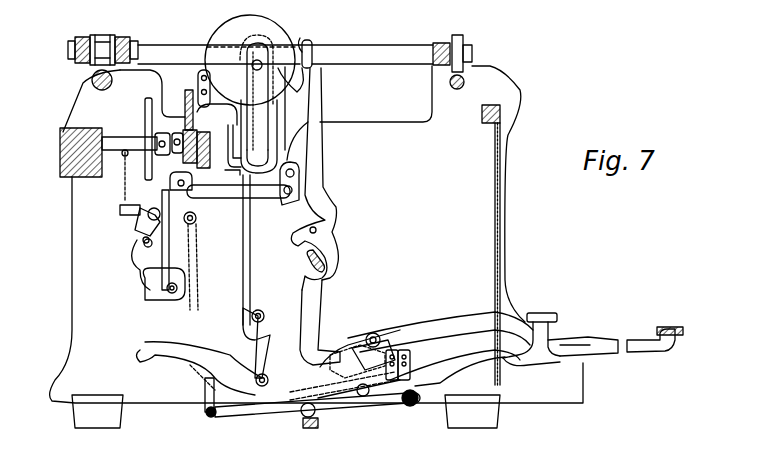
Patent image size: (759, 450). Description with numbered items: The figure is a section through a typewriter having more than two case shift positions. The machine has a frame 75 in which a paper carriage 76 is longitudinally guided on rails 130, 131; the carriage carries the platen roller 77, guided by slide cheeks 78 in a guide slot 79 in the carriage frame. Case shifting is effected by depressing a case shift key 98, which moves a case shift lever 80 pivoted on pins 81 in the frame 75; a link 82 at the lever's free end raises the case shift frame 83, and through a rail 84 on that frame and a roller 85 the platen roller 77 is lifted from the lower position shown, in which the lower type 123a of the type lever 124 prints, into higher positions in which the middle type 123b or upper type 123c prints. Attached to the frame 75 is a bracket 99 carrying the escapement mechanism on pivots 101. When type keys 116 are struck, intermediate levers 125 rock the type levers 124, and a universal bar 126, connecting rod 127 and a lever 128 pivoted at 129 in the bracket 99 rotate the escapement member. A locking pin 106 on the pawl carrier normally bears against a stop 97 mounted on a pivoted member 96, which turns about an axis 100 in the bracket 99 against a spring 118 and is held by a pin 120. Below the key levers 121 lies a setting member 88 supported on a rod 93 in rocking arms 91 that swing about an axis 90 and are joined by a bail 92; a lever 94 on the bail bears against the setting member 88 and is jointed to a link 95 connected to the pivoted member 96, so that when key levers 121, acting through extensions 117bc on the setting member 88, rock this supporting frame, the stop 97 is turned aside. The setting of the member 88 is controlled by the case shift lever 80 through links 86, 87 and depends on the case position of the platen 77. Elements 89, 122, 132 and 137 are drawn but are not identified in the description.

The machine frame 75 is at (72, 324).
The paper carriage 76 is at (403, 62).
The platen roller 77 is at (218, 53).
The slide cheeks 78 is at (252, 88).
The guide slot 79 is at (245, 50).
The case shift lever 80 is at (578, 348).
The pins 81 is at (373, 330).
The link 82 is at (256, 350).
The case shift frame 83 is at (250, 290).
The rail 84 is at (226, 177).
The roller 85 is at (246, 136).
The link 86 is at (357, 370).
The link 87 is at (373, 356).
The setting member 88 is at (418, 378).
The band 89 is at (418, 388).
The axis 90 is at (302, 418).
The rocking arms 91 is at (352, 393).
The bail 92 is at (307, 434).
The rod 93 is at (413, 406).
The lever 94 is at (247, 415).
The link 95 is at (206, 388).
The pivoted member 96 is at (171, 240).
The stop 97 is at (140, 238).
The case shift key 98 is at (670, 323).
The bracket 99 is at (143, 209).
The axis 100 is at (177, 179).
The pivots 101 is at (140, 250).
The locking pin 106 is at (135, 225).
The type keys 116 is at (541, 313).
The key lever extensions 117bc is at (404, 348).
The spring 118 is at (114, 175).
The pin 120 is at (125, 199).
The key levers 121 is at (536, 368).
The bracket 122 is at (312, 50).
The lower type 123a is at (298, 90).
The middle type 123b is at (274, 96).
The upper type 123c is at (300, 40).
The type lever 124 is at (318, 172).
The intermediate lever 125 is at (312, 335).
The universal bar 126 is at (282, 208).
The connecting rod 127 is at (225, 192).
The lever 128 is at (203, 261).
The pivot 129 is at (170, 295).
The rail 130 is at (103, 72).
The rail 131 is at (457, 89).
The stem 132 is at (186, 102).
The gear 137 is at (186, 125).